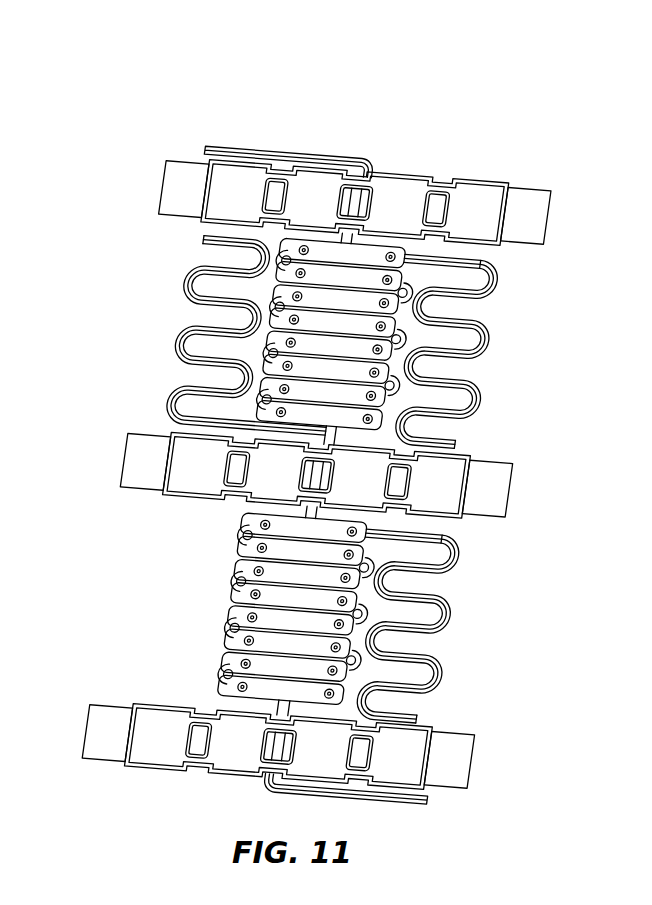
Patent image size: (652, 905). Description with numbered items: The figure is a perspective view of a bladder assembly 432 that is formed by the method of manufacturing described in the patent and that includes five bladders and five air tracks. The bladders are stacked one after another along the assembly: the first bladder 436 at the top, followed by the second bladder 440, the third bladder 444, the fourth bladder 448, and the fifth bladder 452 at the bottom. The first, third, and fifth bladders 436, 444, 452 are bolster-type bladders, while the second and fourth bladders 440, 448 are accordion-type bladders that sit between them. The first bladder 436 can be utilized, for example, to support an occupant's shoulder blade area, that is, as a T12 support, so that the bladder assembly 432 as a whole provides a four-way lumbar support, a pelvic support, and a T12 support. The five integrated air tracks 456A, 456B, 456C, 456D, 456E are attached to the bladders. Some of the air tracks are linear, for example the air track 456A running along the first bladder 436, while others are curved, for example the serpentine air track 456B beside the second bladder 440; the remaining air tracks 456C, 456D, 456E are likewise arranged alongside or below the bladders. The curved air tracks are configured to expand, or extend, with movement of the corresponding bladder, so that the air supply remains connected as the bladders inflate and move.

The bladder assembly 432 is at (611, 122).
The first bladder 436 is at (427, 172).
The second bladder 440 is at (393, 315).
The third bladder 444 is at (468, 452).
The fourth bladder 448 is at (360, 598).
The fifth bladder 452 is at (417, 727).
The air track 456A is at (272, 152).
The air track 456B is at (488, 347).
The air track 456C is at (183, 346).
The air track 456D is at (458, 560).
The air track 456E is at (398, 800).